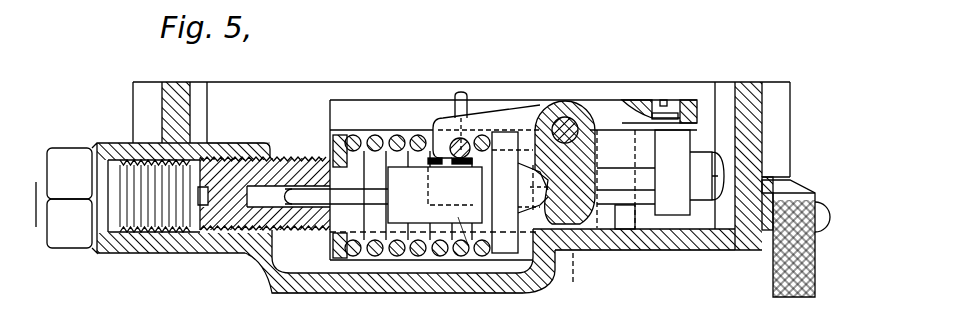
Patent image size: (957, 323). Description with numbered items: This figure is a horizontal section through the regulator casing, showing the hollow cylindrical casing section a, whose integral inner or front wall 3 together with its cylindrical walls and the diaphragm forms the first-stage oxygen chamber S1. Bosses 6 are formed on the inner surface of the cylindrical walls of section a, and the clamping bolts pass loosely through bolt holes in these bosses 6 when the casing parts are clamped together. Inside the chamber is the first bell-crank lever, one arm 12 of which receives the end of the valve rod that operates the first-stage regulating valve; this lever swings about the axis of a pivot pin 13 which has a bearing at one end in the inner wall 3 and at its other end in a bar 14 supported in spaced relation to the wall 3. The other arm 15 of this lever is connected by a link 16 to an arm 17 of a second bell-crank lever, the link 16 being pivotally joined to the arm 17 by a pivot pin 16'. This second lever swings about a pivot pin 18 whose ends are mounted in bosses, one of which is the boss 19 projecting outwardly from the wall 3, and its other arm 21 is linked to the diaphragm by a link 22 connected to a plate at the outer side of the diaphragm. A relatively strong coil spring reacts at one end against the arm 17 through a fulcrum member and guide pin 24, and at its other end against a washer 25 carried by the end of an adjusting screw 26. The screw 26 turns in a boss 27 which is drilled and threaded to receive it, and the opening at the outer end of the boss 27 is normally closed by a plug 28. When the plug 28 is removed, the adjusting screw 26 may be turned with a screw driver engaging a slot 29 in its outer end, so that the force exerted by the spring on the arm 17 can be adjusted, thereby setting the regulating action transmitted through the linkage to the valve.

The inner wall 3 is at (657, 250).
The bosses 6 is at (197, 128).
The arm 12 is at (473, 205).
The pivot pin 13 is at (588, 116).
The bar 14 is at (513, 107).
The arm 15 is at (678, 205).
The link 16 is at (626, 179).
The pivot pin 16' is at (575, 280).
The arm 17 is at (585, 215).
The pivot pin 18 is at (567, 103).
The boss 19 is at (503, 245).
The arm 21 is at (478, 122).
The link 22 is at (455, 97).
The fulcrum member and guide pin 24 is at (468, 245).
The washer 25 is at (340, 137).
The adjusting screw 26 is at (303, 230).
The boss 27 is at (243, 136).
The plug 28 is at (65, 147).
The slot 29 is at (200, 198).
The casing section a is at (245, 243).
The first-stage oxygen chamber S1 is at (255, 124).